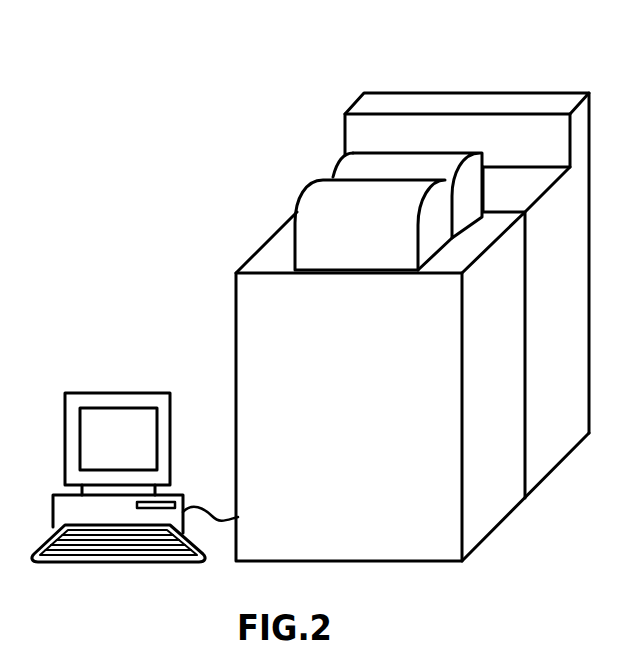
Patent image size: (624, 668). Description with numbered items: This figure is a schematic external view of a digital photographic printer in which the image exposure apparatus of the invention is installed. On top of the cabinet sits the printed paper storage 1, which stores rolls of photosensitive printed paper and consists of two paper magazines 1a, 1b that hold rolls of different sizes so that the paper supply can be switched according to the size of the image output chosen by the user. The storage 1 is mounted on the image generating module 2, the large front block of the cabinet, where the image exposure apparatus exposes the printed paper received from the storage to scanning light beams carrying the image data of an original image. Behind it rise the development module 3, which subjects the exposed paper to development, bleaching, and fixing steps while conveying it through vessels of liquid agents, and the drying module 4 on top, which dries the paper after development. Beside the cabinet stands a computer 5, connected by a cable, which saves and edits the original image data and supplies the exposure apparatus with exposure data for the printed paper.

The printed paper storage 1 is at (303, 187).
The paper magazine 1a is at (297, 208).
The paper magazine 1b is at (335, 168).
The image generating module 2 is at (236, 299).
The development module 3 is at (503, 187).
The drying module 4 is at (545, 107).
The computer 5 is at (120, 392).